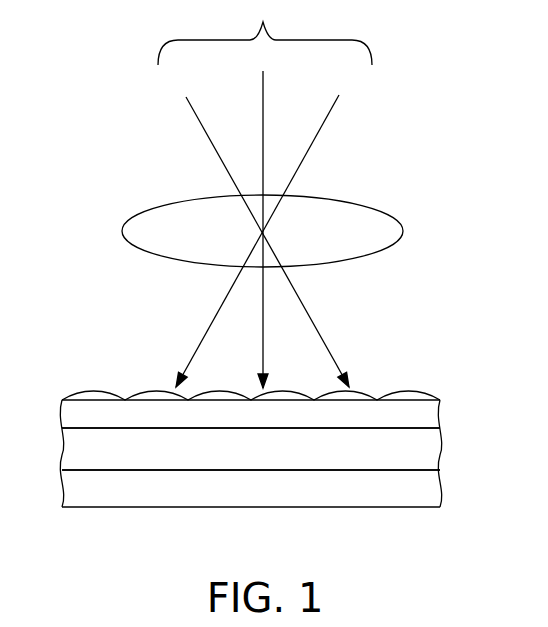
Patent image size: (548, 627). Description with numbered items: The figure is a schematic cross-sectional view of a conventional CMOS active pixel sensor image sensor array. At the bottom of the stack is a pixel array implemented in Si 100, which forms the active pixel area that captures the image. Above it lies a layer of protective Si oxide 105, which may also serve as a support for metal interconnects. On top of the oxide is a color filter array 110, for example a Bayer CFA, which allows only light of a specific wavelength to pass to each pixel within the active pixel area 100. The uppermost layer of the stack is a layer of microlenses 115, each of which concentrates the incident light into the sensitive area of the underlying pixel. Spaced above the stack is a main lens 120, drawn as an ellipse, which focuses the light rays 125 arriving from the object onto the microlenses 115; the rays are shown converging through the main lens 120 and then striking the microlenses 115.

The pixel array implemented in Si 100 is at (172, 487).
The protective Si oxide layer 105 is at (428, 452).
The color filter array 110 is at (428, 414).
The microlenses 115 is at (75, 387).
The main lens 120 is at (398, 243).
The light rays 125 is at (265, 194).